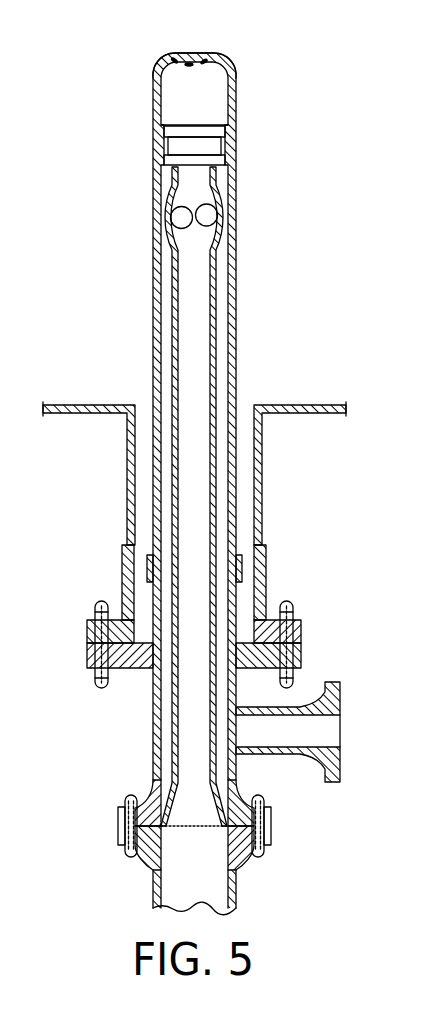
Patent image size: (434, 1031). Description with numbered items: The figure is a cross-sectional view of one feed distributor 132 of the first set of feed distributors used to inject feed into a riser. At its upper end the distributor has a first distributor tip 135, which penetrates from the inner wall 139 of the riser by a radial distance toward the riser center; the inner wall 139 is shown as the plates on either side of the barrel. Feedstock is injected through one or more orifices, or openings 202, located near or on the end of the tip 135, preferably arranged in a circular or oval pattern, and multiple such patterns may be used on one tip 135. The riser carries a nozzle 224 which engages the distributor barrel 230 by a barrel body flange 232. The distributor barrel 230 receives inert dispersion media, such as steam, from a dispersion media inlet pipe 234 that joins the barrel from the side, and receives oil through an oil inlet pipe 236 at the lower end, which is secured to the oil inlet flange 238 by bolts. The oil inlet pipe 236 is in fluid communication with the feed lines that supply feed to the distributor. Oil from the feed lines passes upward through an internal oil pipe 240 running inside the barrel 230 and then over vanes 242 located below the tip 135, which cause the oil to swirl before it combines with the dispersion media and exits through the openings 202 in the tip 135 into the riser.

The feed distributor 132 is at (285, 234).
The first distributor tip 135 is at (236, 67).
The inner wall 139 is at (82, 405).
The openings 202 is at (190, 61).
The nozzle 224 is at (122, 560).
The distributor barrel 230 is at (236, 297).
The barrel body flange 232 is at (301, 652).
The dispersion media inlet pipe 234 is at (292, 755).
The oil inlet pipe 236 is at (236, 895).
The oil inlet flange 238 is at (269, 814).
The internal oil pipe 240 is at (213, 588).
The vanes 242 is at (170, 212).